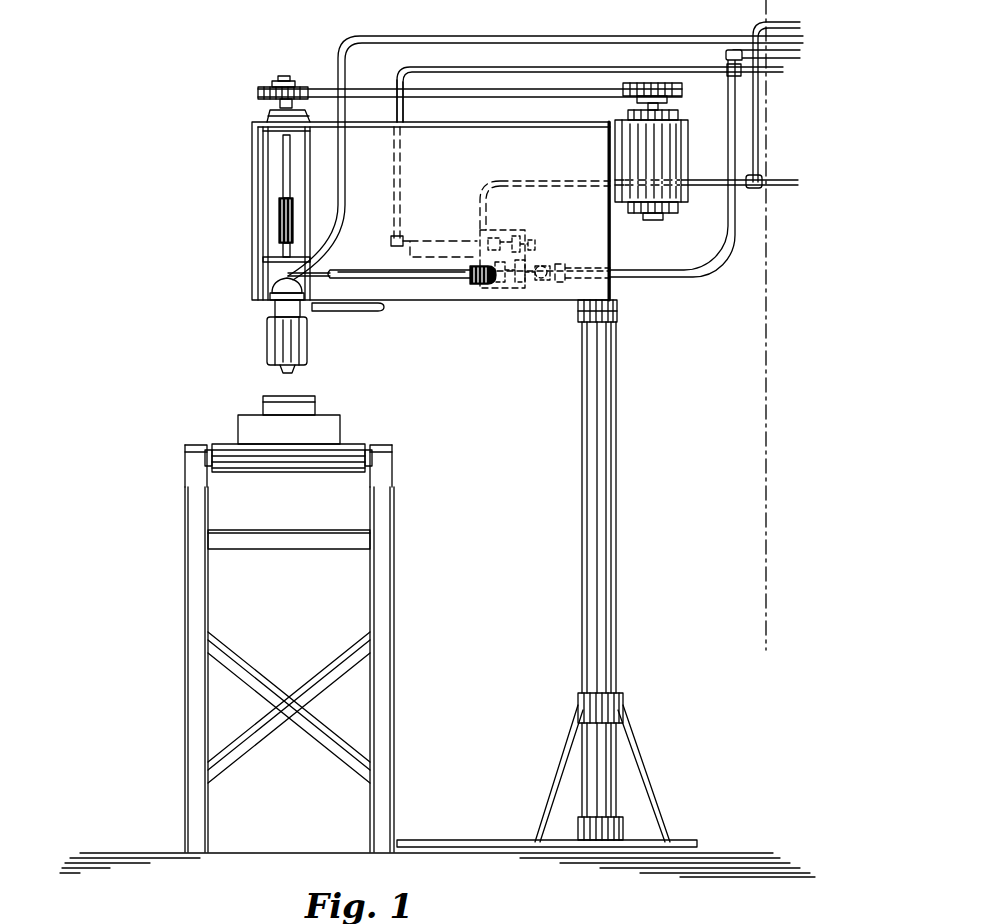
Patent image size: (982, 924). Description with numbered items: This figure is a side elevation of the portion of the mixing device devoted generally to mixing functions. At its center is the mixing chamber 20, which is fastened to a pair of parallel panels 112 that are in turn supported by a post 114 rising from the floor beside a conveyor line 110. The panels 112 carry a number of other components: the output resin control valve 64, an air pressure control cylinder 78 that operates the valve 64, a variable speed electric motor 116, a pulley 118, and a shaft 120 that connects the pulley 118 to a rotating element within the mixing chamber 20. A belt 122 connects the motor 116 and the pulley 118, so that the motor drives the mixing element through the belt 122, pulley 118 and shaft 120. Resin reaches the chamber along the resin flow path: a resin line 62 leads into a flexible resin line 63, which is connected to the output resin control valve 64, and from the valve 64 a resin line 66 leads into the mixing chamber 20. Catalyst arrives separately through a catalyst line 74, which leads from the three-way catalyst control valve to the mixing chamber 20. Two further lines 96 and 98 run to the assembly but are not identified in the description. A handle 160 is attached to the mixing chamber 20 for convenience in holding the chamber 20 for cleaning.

The mixing chamber 20 is at (268, 338).
The resin line 62 is at (796, 60).
The flexible resin line 63 is at (726, 252).
The output resin control valve 64 is at (548, 268).
The resin line 66 is at (380, 270).
The catalyst line 74 is at (490, 37).
The air pressure control cylinder 78 is at (422, 238).
The pipe 96 is at (399, 110).
The pipe 98 is at (548, 181).
The conveyor line 110 is at (395, 464).
The parallel panels 112 is at (482, 300).
The post 114 is at (582, 455).
The variable speed electric motor 116 is at (684, 122).
The pulley 118 is at (304, 86).
The shaft 120 is at (283, 160).
The belt 122 is at (548, 95).
The handle 160 is at (318, 311).